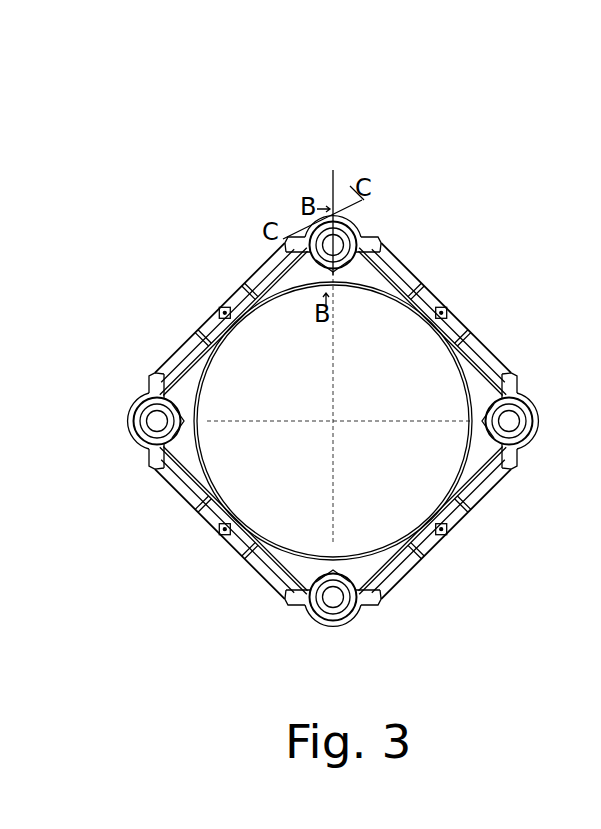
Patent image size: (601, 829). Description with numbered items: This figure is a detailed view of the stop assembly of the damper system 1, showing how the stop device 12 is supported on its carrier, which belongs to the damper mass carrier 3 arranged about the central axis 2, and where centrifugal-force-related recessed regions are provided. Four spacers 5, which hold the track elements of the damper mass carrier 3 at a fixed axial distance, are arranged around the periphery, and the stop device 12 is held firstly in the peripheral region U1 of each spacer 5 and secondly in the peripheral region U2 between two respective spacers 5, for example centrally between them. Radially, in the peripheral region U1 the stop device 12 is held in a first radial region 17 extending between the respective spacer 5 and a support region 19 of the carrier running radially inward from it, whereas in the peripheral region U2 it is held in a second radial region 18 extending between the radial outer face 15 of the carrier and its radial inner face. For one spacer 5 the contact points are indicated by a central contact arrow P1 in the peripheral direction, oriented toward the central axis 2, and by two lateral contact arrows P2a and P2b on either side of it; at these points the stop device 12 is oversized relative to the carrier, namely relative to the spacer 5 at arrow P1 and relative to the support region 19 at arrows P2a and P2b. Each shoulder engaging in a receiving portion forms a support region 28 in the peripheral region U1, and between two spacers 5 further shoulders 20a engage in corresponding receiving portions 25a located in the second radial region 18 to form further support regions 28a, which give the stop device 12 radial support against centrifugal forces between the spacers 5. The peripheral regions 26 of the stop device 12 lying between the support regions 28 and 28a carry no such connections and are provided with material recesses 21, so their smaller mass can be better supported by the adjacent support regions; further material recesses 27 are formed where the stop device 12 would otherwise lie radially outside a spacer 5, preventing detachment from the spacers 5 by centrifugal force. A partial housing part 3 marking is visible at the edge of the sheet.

The damper system 1 is at (595, 513).
The central axis 2 is at (334, 423).
The damper mass carrier 3 is at (595, 463).
The spacer 5 is at (352, 222).
The stop device 12 is at (380, 257).
The radial outer face 15 is at (137, 437).
The first radial region 17 is at (517, 387).
The second radial region 18 is at (232, 303).
The support region 19 is at (480, 422).
The further shoulder 20a is at (212, 324).
The material recess 21 is at (417, 271).
The receiving portion 25a is at (222, 303).
The peripheral region 26 is at (452, 334).
The material recess 27 is at (366, 214).
The support region 28 is at (304, 222).
The further support region 28a is at (227, 317).
The central contact arrow P1 is at (333, 172).
The lateral contact arrow P2a is at (320, 272).
The lateral contact arrow P2b is at (346, 272).
The peripheral region U1 is at (378, 243).
The peripheral region U2 is at (223, 309).